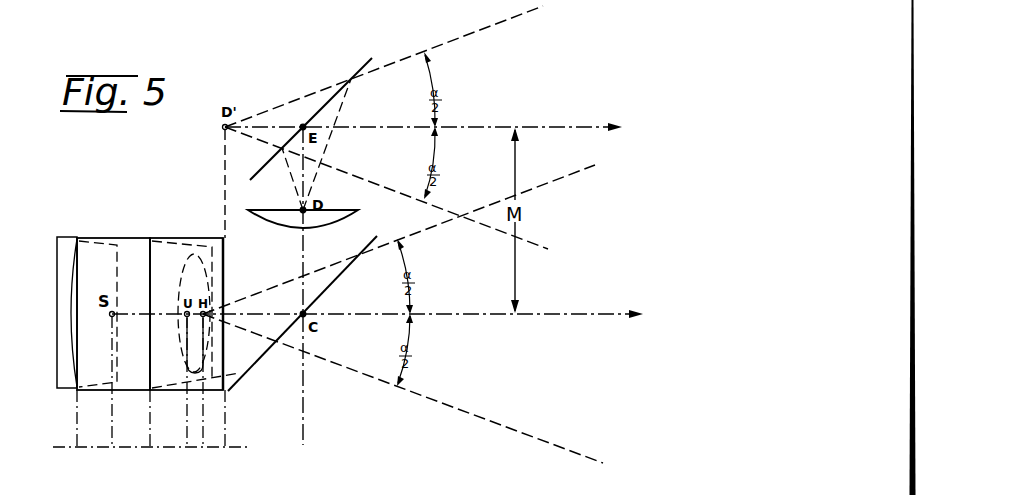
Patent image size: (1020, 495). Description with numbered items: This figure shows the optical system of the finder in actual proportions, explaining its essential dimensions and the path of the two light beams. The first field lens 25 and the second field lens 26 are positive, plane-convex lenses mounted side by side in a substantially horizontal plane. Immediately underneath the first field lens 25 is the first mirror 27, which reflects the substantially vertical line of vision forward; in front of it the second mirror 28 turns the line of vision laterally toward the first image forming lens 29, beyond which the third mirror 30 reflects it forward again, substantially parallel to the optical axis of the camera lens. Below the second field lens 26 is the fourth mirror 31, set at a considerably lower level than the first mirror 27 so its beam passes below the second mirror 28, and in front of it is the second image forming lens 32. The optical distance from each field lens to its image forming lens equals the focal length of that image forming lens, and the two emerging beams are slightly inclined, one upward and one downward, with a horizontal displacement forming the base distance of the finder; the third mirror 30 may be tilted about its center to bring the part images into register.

The first field lens 25 is at (169, 236).
The second field lens 26 is at (107, 238).
The first mirror 27 is at (178, 384).
The second mirror 28 is at (257, 362).
The first image forming lens 29 is at (281, 226).
The third mirror 30 is at (273, 158).
The fourth mirror 31 is at (63, 388).
The second image forming lens 32 is at (188, 352).